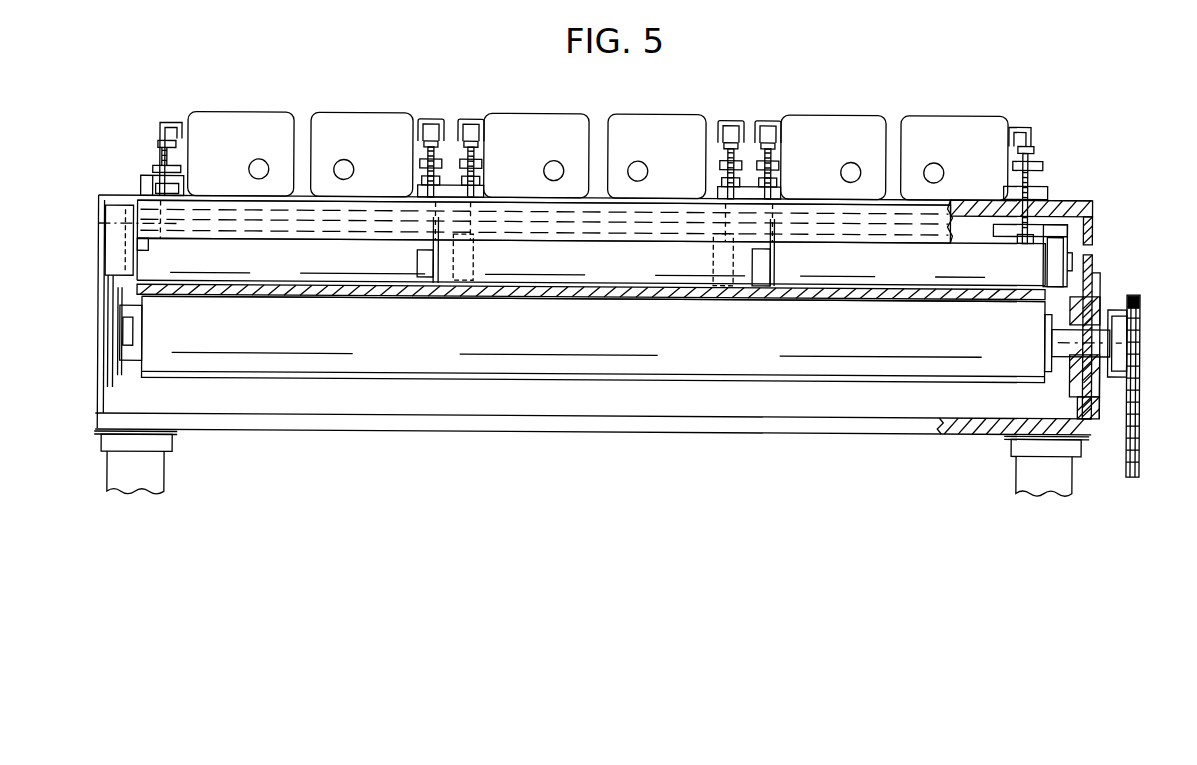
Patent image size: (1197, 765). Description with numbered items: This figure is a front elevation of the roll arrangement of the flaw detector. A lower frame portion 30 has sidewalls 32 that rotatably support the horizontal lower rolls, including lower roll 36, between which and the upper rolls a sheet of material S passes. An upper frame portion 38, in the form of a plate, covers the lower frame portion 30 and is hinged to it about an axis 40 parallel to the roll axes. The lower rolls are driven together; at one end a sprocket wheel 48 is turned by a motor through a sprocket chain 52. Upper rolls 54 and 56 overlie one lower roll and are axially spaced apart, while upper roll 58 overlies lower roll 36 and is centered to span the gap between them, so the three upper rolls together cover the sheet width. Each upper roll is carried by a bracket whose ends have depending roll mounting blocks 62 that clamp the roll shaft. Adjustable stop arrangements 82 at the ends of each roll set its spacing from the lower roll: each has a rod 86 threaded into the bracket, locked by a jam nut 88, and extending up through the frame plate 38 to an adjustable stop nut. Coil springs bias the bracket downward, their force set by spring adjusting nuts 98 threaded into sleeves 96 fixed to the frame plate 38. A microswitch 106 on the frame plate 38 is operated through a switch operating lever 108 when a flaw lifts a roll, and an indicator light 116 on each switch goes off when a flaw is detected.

The lower frame portion 30 is at (1100, 430).
The sidewalls 32 is at (1094, 260).
The lower roll 36 is at (728, 370).
The upper frame portion 38 is at (1076, 206).
The hinge axis 40 is at (98, 228).
The sprocket wheel 48 is at (1117, 337).
The sprocket chain 52 is at (1140, 434).
The upper roll 54 is at (908, 288).
The upper roll 56 is at (342, 286).
The upper roll 58 is at (626, 284).
The roll mounting block 62 is at (771, 253).
The adjustable stop arrangement 82 is at (470, 183).
The rod 86 is at (1000, 226).
The jam nut 88 is at (1019, 243).
The sleeve 96 is at (142, 182).
The spring adjusting nut 98 is at (158, 143).
The microswitch 106 is at (307, 114).
The switch operating lever 108 is at (757, 121).
The indicator light 116 is at (263, 167).
The sheet of material S is at (513, 296).